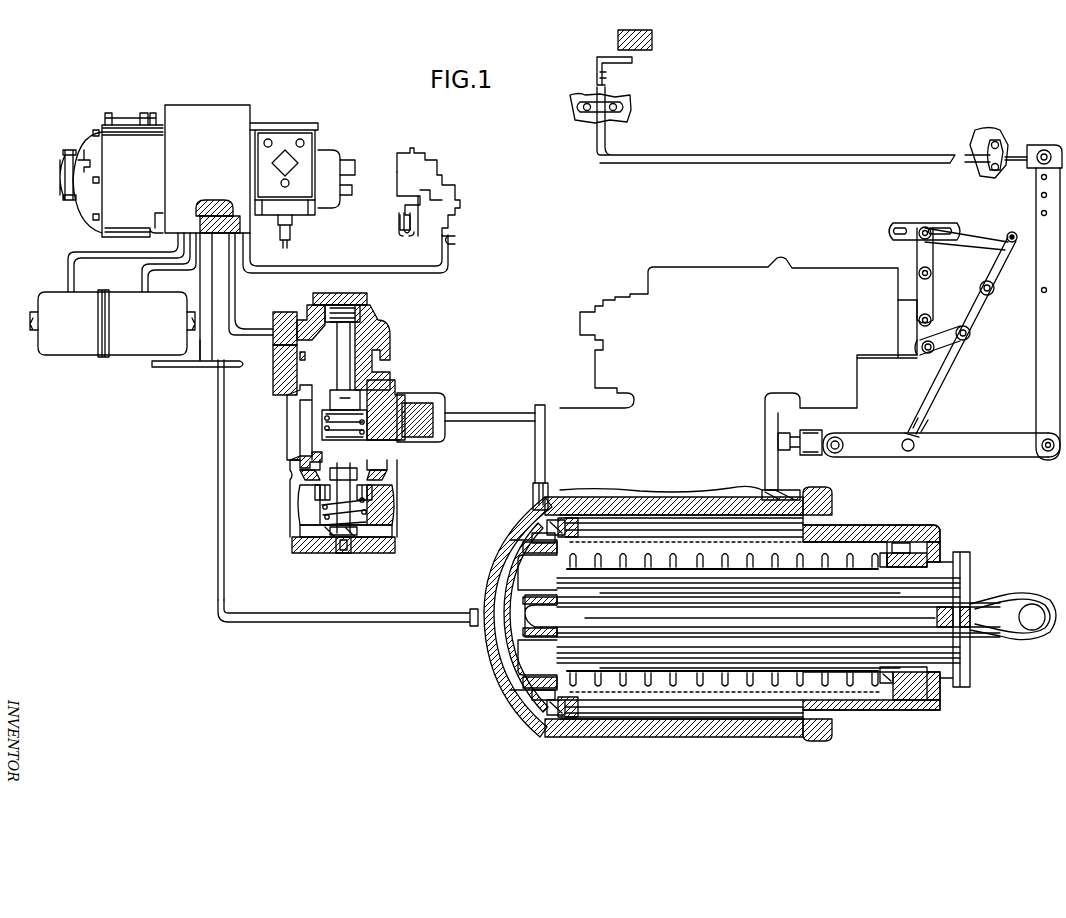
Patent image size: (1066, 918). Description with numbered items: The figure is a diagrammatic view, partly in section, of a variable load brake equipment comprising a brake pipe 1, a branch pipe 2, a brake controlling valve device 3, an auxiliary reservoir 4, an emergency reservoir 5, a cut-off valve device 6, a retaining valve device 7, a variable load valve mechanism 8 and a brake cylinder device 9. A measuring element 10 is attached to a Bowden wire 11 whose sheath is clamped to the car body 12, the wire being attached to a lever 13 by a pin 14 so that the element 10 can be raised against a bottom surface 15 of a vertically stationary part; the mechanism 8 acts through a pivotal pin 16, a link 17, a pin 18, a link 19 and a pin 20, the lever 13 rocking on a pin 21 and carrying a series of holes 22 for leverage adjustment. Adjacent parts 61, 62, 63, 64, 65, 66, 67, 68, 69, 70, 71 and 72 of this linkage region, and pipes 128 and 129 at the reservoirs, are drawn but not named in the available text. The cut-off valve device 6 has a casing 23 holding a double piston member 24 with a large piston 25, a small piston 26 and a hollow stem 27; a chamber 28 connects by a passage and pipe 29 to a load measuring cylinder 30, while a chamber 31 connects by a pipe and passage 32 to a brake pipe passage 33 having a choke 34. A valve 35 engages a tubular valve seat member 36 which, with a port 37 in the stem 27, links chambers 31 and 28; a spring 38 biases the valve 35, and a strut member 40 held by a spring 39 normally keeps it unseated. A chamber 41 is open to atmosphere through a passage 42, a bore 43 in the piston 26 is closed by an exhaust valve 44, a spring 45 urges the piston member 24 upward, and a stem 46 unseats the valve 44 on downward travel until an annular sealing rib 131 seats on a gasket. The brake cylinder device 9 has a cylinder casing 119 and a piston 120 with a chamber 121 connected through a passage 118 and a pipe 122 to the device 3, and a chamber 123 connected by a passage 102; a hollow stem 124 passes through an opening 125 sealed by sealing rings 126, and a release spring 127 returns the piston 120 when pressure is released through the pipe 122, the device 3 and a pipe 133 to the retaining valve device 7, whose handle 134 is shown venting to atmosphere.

The brake pipe 1 is at (178, 370).
The branch pipe 2 is at (212, 348).
The brake controlling valve device 3 is at (252, 106).
The auxiliary reservoir 4 is at (72, 345).
The emergency reservoir 5 is at (137, 345).
The cut-off valve device 6 is at (290, 556).
The retaining valve device 7 is at (460, 187).
The variable load valve mechanism 8 is at (708, 266).
The brake cylinder device 9 is at (505, 698).
The measuring element 10 is at (597, 62).
The Bowden wire 11 is at (766, 158).
The car body 12 is at (622, 113).
The lever 13 is at (1045, 314).
The pin 14 is at (1044, 150).
The bottom surface 15 is at (652, 40).
The pivotal pin 16 is at (838, 453).
The link 17 is at (860, 450).
The pin 18 is at (914, 452).
The link 19 is at (1010, 452).
The pin 20 is at (1052, 452).
The pin 21 is at (1047, 290).
The holes 22 is at (1047, 213).
The casing 23 is at (398, 468).
The double piston member 24 is at (290, 403).
The large piston 25 is at (298, 391).
The small piston 26 is at (290, 466).
The hollow stem 27 is at (322, 415).
The chamber 28 is at (398, 384).
The passage and pipe 29 is at (522, 411).
The load measuring cylinder 30 is at (535, 453).
The chamber 31 is at (312, 326).
The pipe and passage 32 is at (272, 330).
The brake pipe passage 33 is at (204, 206).
The choke 34 is at (222, 216).
The valve 35 is at (392, 320).
The tubular valve seat member 36 is at (365, 358).
The port 37 is at (372, 402).
The spring 38 is at (370, 300).
The spring 39 is at (433, 406).
The strut member 40 is at (393, 362).
The chamber 41 is at (298, 505).
The passage 42 is at (390, 517).
The bore 43 is at (375, 492).
The exhaust valve 44 is at (436, 436).
The spring 45 is at (395, 537).
The stem 46 is at (362, 553).
The actuating rod 61 is at (948, 370).
The pivot 62 is at (991, 296).
The pivot pin 63 is at (1012, 233).
The link 64 is at (990, 216).
The slotted link 65 is at (896, 226).
The pin 66 is at (933, 220).
The link 67 is at (930, 258).
The pin 68 is at (920, 272).
The pin 69 is at (971, 334).
The pin 70 is at (935, 340).
The link 71 is at (945, 344).
The pivot 72 is at (924, 352).
The passage 102 is at (770, 497).
The passage 118 is at (532, 495).
The cylinder casing 119 is at (620, 712).
The piston 120 is at (553, 717).
The chamber 121 is at (520, 718).
The pipe 122 is at (410, 622).
The chamber 123 is at (690, 700).
The hollow stem 124 is at (948, 667).
The opening 125 is at (860, 568).
The sealing rings 126 is at (912, 672).
The release spring 127 is at (770, 700).
The conduit 128 is at (68, 286).
The conduit 129 is at (146, 285).
The annular sealing rib 131 is at (292, 392).
The pipe 133 is at (372, 268).
The handle 134 is at (410, 248).